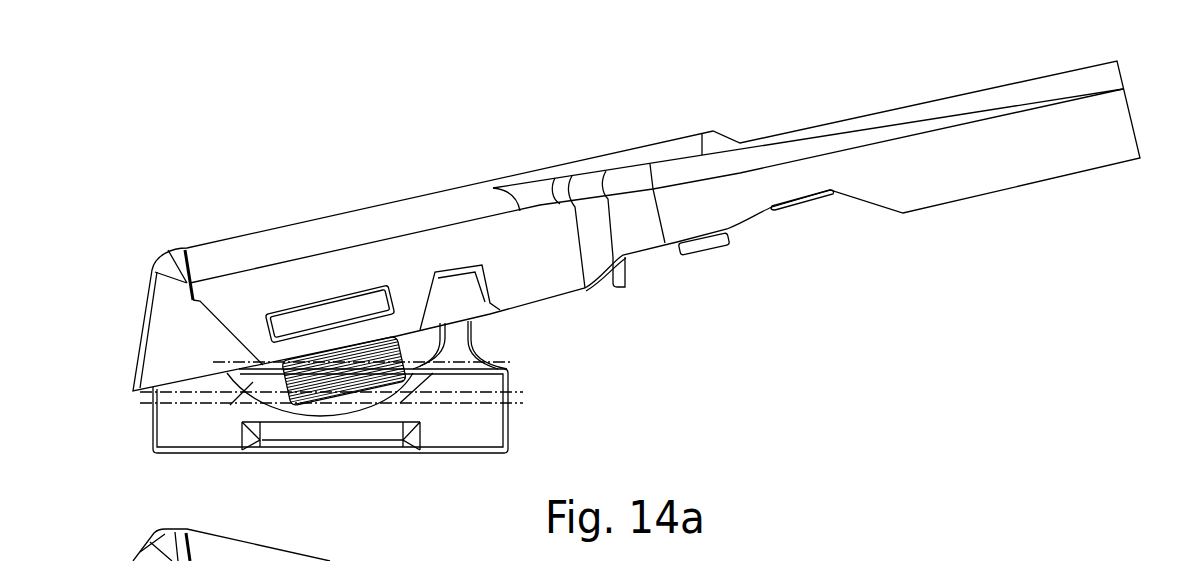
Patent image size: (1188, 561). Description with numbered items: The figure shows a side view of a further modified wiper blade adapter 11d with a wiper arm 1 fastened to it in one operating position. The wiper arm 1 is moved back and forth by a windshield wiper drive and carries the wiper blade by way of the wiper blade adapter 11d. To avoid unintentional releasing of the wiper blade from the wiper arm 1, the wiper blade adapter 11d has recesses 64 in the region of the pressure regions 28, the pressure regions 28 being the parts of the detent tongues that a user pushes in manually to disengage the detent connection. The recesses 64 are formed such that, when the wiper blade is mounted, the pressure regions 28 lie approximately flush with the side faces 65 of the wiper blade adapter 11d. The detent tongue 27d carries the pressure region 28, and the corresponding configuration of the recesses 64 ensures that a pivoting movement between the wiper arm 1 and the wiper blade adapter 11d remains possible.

The wiper arm 1 is at (866, 108).
The recess 64 is at (510, 368).
The wiper blade adapter 11d is at (519, 412).
The side face 65 is at (188, 410).
The press plate 27d is at (307, 397).
The pressure region 28 is at (343, 387).